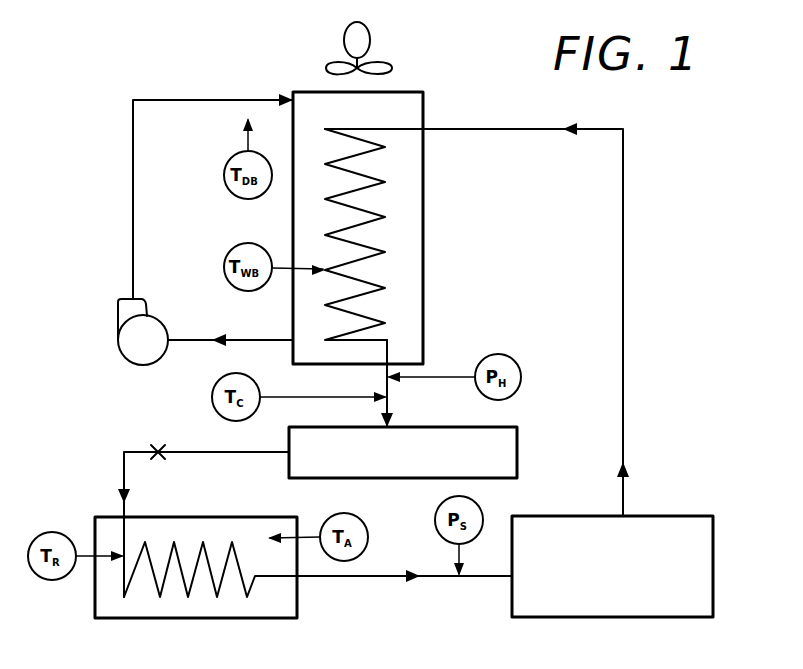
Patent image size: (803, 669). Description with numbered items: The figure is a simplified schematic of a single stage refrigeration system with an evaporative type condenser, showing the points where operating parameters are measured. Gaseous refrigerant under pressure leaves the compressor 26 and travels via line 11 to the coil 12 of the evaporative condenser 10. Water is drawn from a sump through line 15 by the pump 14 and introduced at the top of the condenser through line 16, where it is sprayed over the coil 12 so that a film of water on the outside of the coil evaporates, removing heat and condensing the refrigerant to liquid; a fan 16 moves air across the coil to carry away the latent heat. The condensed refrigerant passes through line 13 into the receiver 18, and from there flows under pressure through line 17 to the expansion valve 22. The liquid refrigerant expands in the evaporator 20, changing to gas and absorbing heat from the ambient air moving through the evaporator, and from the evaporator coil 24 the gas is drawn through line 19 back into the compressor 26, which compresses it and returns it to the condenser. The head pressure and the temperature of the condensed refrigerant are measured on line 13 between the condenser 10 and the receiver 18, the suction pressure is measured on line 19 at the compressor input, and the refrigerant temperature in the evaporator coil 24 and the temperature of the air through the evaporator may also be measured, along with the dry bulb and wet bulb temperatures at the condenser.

The evaporative condenser 10 is at (423, 241).
The line 11 is at (623, 198).
The coil 12 is at (385, 147).
The line 13 is at (383, 372).
The pump 14 is at (118, 330).
The line 15 is at (270, 340).
The line / fan 16 is at (133, 192).
The line 17 is at (217, 452).
The receiver 18 is at (517, 452).
The line 19 is at (345, 578).
The evaporator 20 is at (190, 517).
The expansion valve 22 is at (158, 446).
The evaporator coil 24 is at (124, 577).
The compressor 26 is at (672, 516).